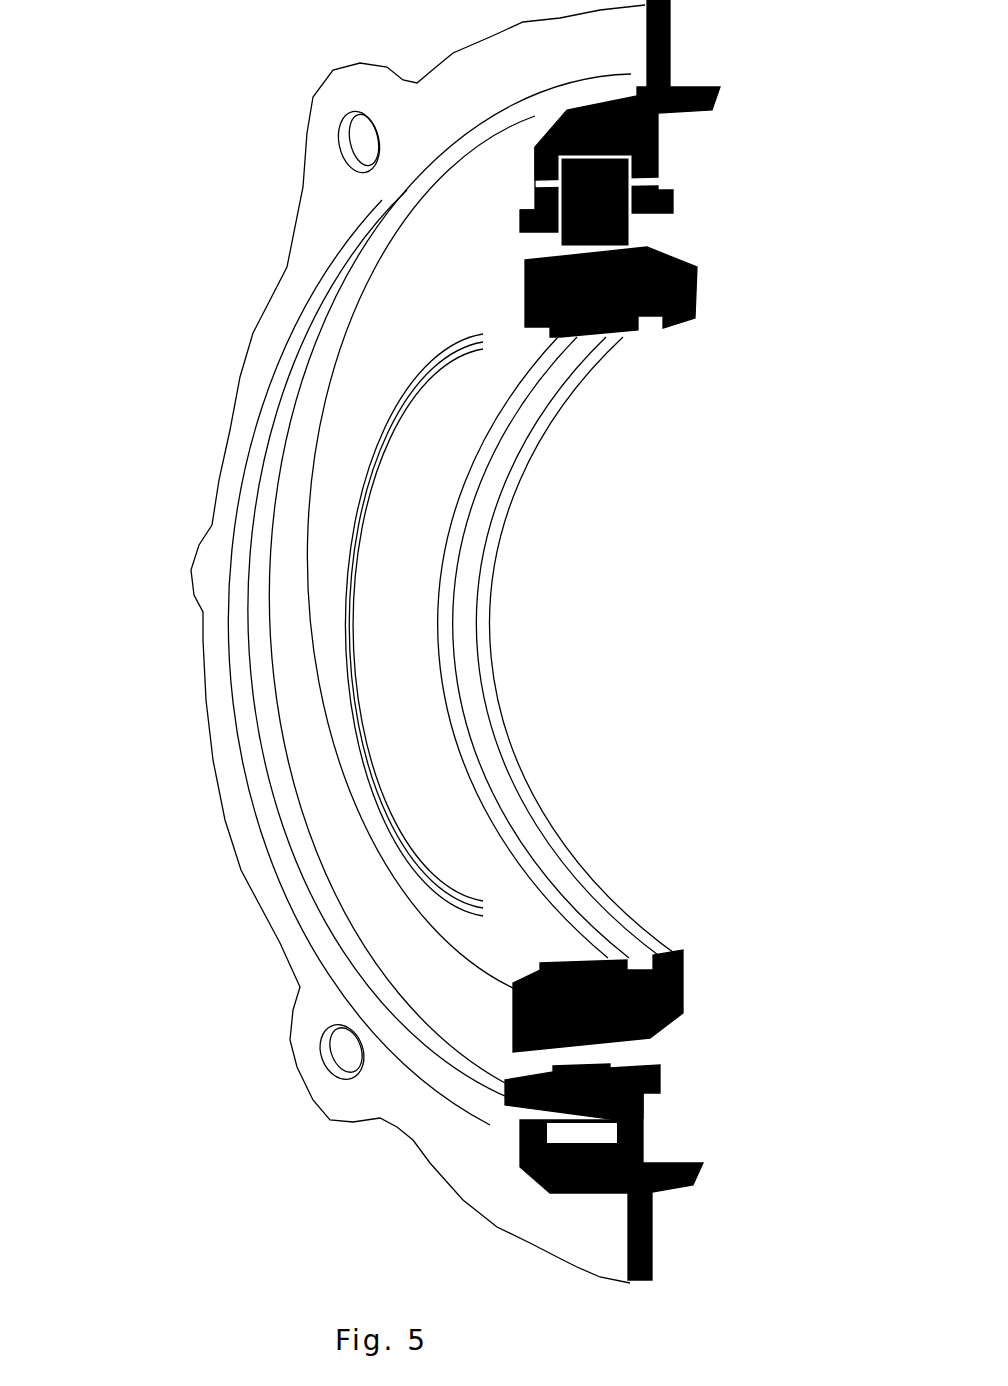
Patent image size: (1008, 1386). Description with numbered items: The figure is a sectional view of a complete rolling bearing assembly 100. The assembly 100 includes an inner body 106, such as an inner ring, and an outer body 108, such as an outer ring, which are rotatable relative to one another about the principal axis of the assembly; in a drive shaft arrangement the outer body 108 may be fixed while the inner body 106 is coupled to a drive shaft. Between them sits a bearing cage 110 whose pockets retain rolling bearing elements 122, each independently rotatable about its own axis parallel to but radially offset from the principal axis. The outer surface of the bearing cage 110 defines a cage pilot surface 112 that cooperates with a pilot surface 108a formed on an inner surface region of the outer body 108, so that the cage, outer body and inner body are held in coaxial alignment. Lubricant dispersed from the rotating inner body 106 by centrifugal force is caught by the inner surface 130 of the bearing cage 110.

The assembly 100 is at (683, 583).
The inner body 106 is at (707, 287).
The outer body 108 is at (672, 147).
The pilot surface 108a is at (530, 185).
The bearing cage 110 is at (675, 207).
The cage pilot surface 112 is at (530, 185).
The rolling bearing elements 122 is at (633, 228).
The inner surface 130 is at (532, 233).